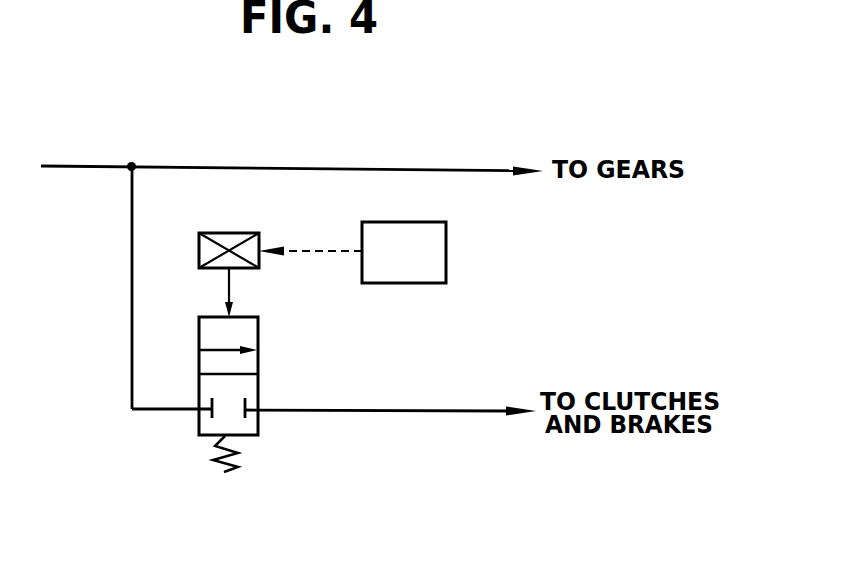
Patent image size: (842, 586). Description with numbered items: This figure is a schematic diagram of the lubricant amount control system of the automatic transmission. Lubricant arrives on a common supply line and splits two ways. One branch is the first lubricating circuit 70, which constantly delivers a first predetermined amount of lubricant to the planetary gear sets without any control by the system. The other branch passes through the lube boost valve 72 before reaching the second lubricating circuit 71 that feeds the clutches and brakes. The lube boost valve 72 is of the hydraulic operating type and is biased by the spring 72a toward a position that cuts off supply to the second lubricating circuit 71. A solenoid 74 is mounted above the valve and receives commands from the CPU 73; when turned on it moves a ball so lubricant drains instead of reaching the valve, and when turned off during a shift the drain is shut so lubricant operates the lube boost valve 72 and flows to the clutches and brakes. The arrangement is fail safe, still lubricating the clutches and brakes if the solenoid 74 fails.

The first lubricating circuit 70 is at (435, 170).
The second lubricating circuit 71 is at (450, 413).
The lube boost valve 72 is at (255, 436).
The spring 72a is at (228, 468).
The CPU 73 is at (422, 284).
The solenoid 74 is at (246, 232).